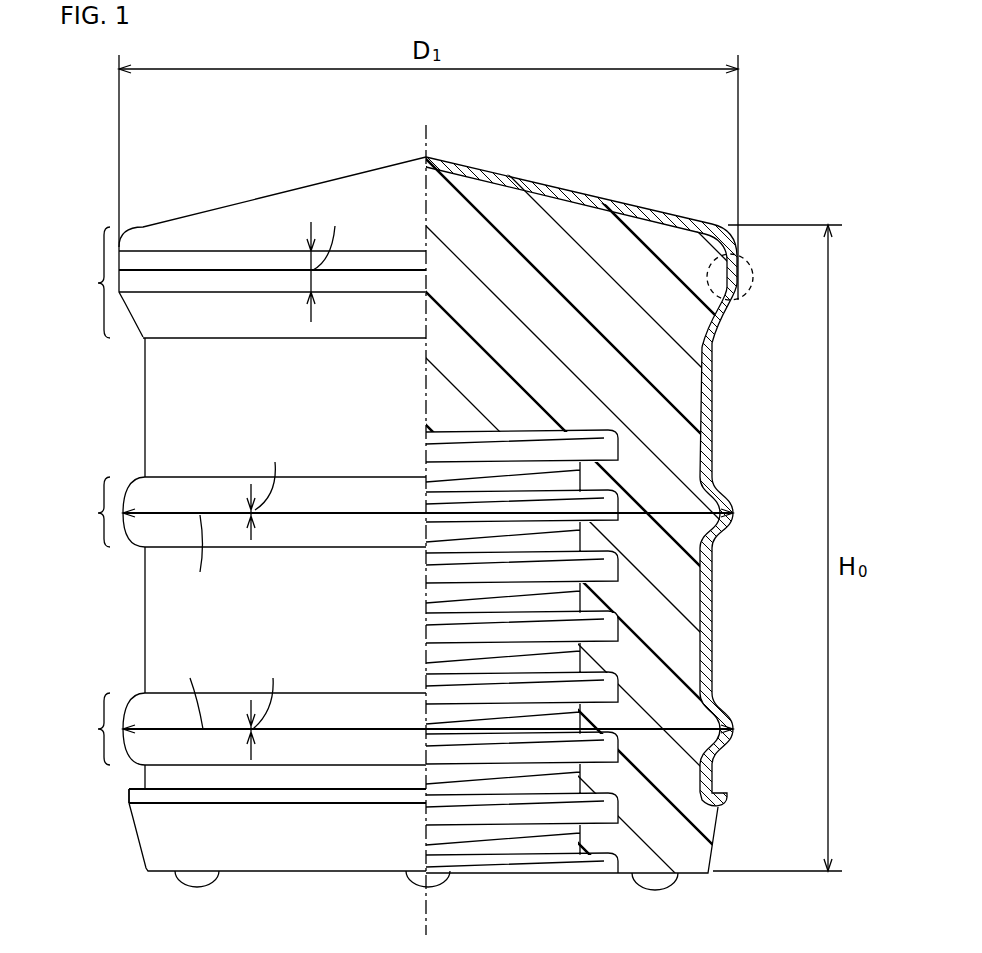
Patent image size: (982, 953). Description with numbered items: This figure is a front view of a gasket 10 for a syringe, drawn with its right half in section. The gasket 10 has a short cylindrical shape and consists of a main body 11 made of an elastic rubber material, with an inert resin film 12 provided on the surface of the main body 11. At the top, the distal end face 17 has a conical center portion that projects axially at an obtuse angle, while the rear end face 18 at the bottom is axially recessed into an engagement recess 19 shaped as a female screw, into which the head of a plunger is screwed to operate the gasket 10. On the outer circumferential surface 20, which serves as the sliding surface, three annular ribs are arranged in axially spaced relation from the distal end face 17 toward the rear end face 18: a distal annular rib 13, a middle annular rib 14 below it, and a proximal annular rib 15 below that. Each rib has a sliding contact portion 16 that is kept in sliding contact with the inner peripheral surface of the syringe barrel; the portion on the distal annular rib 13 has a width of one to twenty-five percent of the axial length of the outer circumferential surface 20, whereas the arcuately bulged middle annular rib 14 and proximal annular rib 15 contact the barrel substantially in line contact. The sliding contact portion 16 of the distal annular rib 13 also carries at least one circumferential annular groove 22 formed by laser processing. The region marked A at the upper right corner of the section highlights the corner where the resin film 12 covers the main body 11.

The gasket 10 is at (583, 160).
The main body 11 is at (680, 388).
The inert resin film 12 is at (642, 211).
The distal annular rib 13 is at (242, 247).
The second annular rib (middle annular rib) 14 is at (395, 519).
The third annular rib (proximal annular rib) 15 is at (395, 707).
The sliding contact portion 16 is at (200, 263).
The distal end face 17 is at (440, 157).
The rear end face 18 is at (308, 873).
The engagement recess 19 is at (582, 850).
The outer circumferential surface (sliding surface) 20 is at (753, 431).
The annular groove 22 is at (233, 272).
The detail region A is at (749, 299).